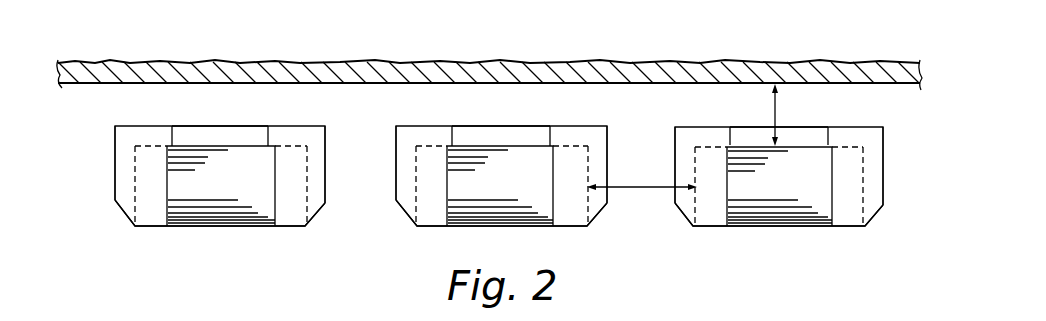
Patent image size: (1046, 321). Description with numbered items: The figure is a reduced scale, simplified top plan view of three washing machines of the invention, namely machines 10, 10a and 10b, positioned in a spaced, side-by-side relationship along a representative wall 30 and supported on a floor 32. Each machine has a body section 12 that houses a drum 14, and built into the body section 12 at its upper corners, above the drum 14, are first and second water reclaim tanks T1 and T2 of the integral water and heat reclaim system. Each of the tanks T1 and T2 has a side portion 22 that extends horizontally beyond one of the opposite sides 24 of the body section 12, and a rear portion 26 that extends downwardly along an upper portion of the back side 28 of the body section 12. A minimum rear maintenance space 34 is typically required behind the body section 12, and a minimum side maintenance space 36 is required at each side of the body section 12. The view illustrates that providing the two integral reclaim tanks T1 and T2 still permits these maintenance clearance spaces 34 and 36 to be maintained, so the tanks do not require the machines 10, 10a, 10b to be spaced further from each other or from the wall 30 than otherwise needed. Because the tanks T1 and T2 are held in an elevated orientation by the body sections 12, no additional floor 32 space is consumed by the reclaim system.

The washing machine 10 is at (203, 240).
The washing machine 10a is at (487, 236).
The washing machine 10b is at (780, 238).
The body section 12 is at (254, 236).
The drum 14 is at (207, 192).
The side portion 22 is at (115, 139).
The opposite sides 24 is at (135, 193).
The rear portion 26 is at (156, 126).
The back side 28 is at (205, 146).
The wall 30 is at (799, 68).
The floor 32 is at (649, 117).
The rear maintenance space 34 is at (777, 110).
The side maintenance space 36 is at (652, 191).
The first water reclaim tank T1 is at (108, 165).
The second water reclaim tank T2 is at (334, 152).